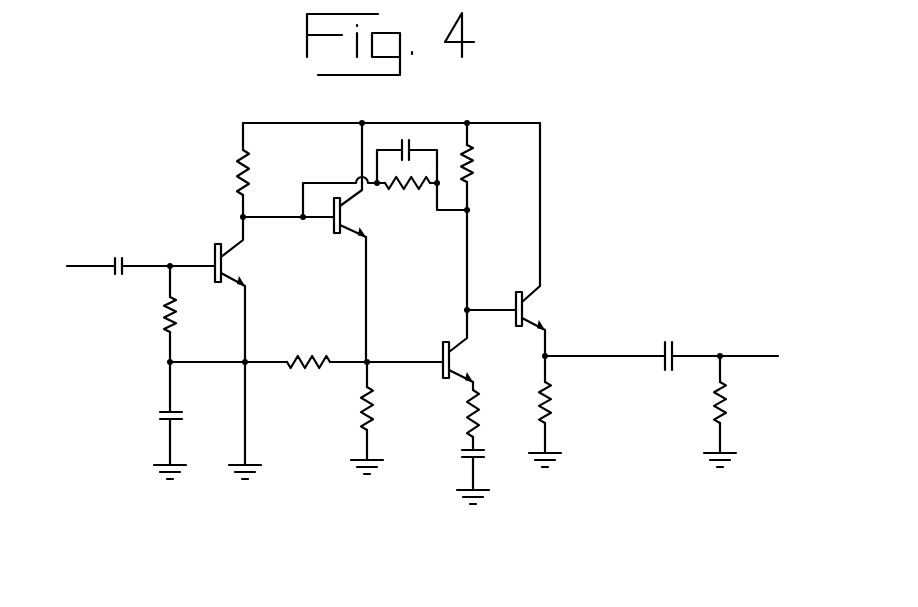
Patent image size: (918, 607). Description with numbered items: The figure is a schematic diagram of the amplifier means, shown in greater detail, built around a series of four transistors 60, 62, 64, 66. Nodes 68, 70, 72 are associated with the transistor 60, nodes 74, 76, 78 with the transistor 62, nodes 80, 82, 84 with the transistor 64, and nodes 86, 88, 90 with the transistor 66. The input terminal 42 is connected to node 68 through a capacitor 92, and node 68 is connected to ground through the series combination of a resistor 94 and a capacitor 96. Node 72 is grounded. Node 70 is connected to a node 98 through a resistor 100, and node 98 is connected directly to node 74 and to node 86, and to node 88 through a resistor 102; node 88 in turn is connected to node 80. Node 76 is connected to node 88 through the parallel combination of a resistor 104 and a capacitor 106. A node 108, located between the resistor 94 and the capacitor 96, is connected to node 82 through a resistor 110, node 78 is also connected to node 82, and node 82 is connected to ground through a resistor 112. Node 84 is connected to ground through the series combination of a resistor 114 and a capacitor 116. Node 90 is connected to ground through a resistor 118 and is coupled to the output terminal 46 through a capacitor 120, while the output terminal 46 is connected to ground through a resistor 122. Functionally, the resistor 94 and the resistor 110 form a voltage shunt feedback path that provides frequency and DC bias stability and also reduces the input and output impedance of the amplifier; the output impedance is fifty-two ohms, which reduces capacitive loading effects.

The input terminal 42 is at (82, 262).
The output terminal 46 is at (758, 349).
The transistor 60 is at (238, 260).
The transistor 62 is at (353, 213).
The transistor 64 is at (453, 357).
The transistor 66 is at (542, 303).
The node 68 is at (195, 262).
The node 70 is at (242, 238).
The node 72 is at (248, 302).
The node 74 is at (363, 195).
The node 76 is at (317, 220).
The node 78 is at (368, 275).
The node 80 is at (465, 340).
The node 82 is at (408, 364).
The node 84 is at (467, 392).
The node 86 is at (542, 276).
The node 88 is at (493, 305).
The node 90 is at (548, 338).
The capacitor 92 is at (119, 279).
The resistor 94 is at (160, 328).
The capacitor 96 is at (160, 418).
The node 98 is at (362, 123).
The resistor 100 is at (255, 168).
The resistor 102 is at (507, 158).
The resistor 104 is at (420, 188).
The capacitor 106 is at (423, 132).
The node 108 is at (168, 365).
The resistor 110 is at (298, 369).
The resistor 112 is at (360, 403).
The resistor 114 is at (470, 427).
The capacitor 116 is at (462, 458).
The resistor 118 is at (552, 403).
The capacitor 120 is at (670, 330).
The resistor 122 is at (727, 403).